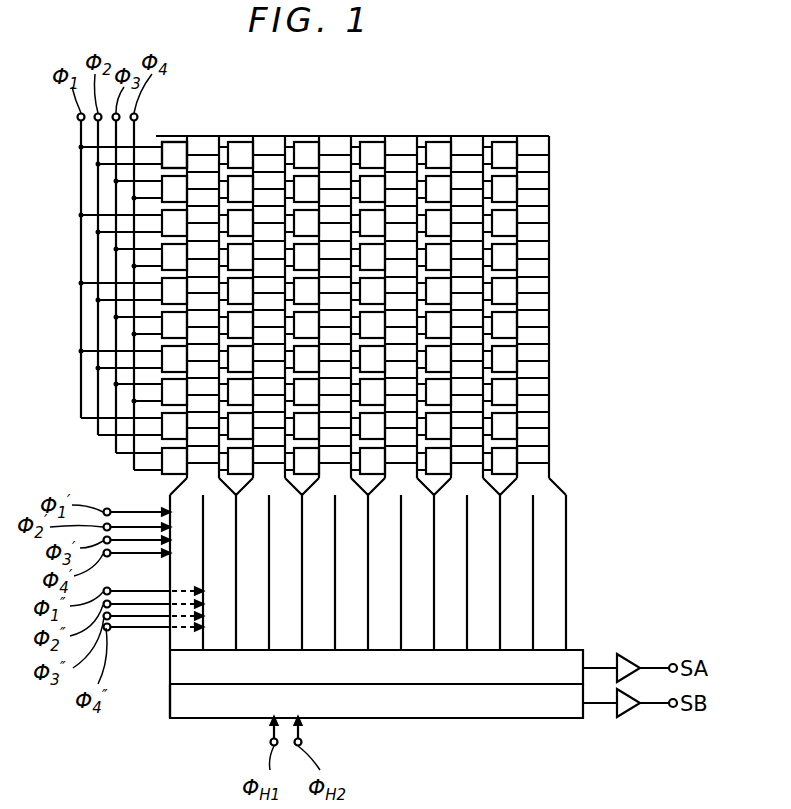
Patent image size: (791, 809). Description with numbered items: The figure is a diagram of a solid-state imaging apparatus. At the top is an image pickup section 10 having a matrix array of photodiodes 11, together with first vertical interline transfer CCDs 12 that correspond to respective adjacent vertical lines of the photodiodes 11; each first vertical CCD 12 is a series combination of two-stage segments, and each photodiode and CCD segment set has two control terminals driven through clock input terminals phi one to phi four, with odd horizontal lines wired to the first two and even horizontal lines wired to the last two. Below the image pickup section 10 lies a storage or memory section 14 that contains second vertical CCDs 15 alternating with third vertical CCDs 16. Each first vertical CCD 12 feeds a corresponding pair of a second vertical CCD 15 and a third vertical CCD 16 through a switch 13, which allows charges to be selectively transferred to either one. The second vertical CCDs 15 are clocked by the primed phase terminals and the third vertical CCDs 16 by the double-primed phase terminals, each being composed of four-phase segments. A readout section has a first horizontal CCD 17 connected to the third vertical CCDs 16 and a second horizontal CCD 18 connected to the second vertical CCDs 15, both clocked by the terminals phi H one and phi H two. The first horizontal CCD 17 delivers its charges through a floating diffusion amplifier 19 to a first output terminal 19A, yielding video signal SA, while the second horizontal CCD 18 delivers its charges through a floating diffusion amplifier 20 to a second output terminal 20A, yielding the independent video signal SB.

The image pickup section 10 is at (383, 291).
The photodiode 11 is at (178, 143).
The first vertical CCD 12 is at (207, 145).
The switch 13 is at (585, 480).
The storage or memory section 14 is at (365, 566).
The second vertical CCD 15 is at (176, 494).
The third vertical CCD 16 is at (279, 603).
The first horizontal CCD 17 is at (182, 668).
The second horizontal CCD 18 is at (182, 698).
The floating diffusion amplifier 19 is at (628, 655).
The first output terminal 19A is at (673, 664).
The floating diffusion amplifier 20 is at (628, 712).
The second output terminal 20A is at (673, 707).